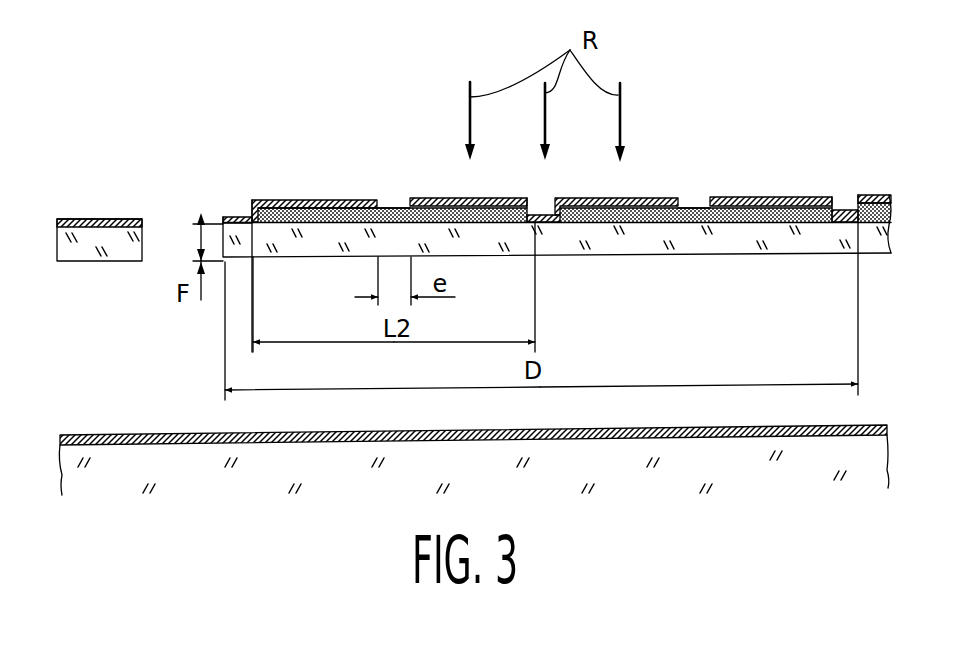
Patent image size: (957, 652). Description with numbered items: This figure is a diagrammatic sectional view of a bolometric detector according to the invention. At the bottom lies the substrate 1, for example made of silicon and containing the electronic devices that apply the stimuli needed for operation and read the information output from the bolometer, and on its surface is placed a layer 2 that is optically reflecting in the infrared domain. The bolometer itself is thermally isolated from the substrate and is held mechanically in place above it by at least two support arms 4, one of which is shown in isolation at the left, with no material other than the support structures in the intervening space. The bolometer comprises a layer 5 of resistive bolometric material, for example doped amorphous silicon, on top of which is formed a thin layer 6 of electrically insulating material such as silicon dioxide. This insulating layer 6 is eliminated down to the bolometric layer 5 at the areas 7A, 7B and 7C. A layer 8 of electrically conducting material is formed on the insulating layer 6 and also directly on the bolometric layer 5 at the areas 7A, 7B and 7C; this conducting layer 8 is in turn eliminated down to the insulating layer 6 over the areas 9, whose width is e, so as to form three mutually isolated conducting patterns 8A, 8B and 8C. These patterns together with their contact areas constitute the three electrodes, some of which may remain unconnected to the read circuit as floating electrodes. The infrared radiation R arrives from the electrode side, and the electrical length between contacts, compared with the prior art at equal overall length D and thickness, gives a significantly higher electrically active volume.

The substrate 1 is at (192, 472).
The layer 2 is at (130, 440).
The support arm 4 is at (103, 272).
The layer of bolometric material 5 is at (641, 240).
The layer of electrically insulating material 6 is at (735, 212).
The area 7A is at (235, 210).
The area 7B is at (540, 206).
The area 7C is at (848, 193).
The layer of electrically conducting material 8 is at (108, 219).
The conducting pattern 8A is at (305, 198).
The conducting pattern 8B is at (450, 196).
The conducting pattern 8C is at (760, 195).
The area 9 is at (393, 198).